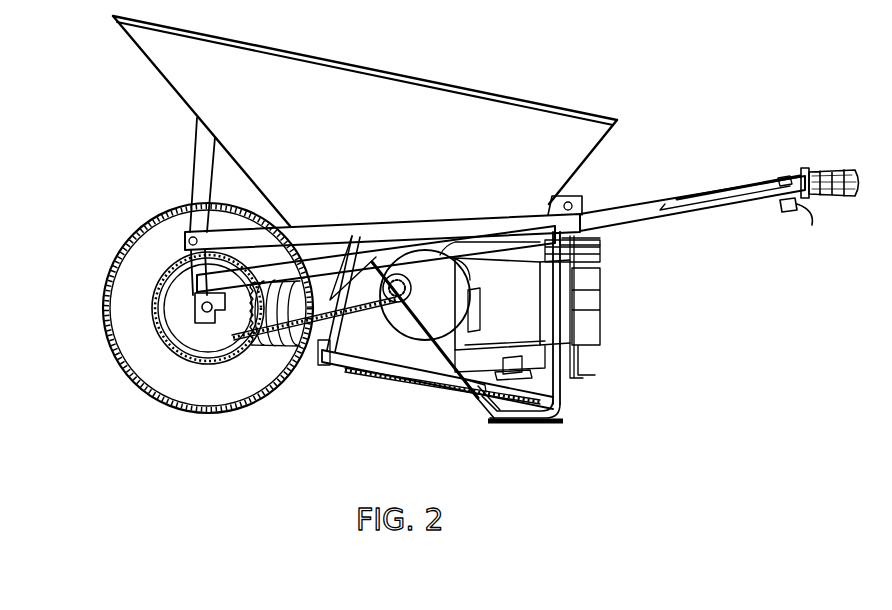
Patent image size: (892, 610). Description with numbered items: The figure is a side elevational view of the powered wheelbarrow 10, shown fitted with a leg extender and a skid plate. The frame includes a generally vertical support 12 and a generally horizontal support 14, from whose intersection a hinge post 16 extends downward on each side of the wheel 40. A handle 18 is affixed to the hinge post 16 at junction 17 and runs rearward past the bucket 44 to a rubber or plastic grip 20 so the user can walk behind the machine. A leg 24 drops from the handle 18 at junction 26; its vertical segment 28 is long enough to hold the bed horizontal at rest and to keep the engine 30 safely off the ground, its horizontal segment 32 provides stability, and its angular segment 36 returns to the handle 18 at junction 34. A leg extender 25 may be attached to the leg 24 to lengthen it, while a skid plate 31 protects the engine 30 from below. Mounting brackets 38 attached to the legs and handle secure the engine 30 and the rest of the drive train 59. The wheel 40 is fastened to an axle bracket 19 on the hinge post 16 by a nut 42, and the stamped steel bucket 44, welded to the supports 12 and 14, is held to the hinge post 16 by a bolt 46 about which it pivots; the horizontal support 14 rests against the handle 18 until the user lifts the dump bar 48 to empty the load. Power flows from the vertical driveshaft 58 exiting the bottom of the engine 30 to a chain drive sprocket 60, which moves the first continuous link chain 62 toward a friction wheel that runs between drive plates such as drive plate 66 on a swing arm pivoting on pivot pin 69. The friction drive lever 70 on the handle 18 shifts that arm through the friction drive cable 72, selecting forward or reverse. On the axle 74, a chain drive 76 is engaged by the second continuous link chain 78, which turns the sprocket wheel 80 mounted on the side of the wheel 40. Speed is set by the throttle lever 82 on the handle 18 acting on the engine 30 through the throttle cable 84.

The wheelbarrow 10 is at (443, 44).
The vertical support 12 is at (200, 160).
The horizontal support 14 is at (317, 238).
The hinge post 16 is at (198, 263).
The junction 17 is at (197, 284).
The handle 18 is at (668, 221).
The axle bracket 19 is at (185, 303).
The grip 20 is at (822, 170).
The leg 24 is at (556, 423).
The leg extender 25 is at (493, 421).
The junction 26 is at (578, 240).
The vertical segment 28 is at (562, 397).
The engine 30 is at (595, 332).
The skid plate 31 is at (416, 392).
The horizontal segment 32 is at (523, 422).
The junction 34 is at (368, 265).
The angular segment 36 is at (472, 388).
The mounting bracket 38 is at (400, 373).
The wheel 40 is at (100, 313).
The nut 42 is at (207, 322).
The bucket 44 is at (386, 131).
The bolt 46 is at (188, 243).
The dump bar 48 is at (585, 364).
The vertical driveshaft 58 is at (505, 357).
The drive train 59 is at (312, 366).
The chain drive sprocket 60 is at (563, 412).
The first continuous link chain 62 is at (478, 398).
The drive plate 66 is at (444, 256).
The pivot pin 69 is at (408, 377).
The friction drive lever 70 is at (792, 212).
The friction drive cable 72 is at (752, 184).
The axle 74 is at (428, 270).
The chain drive 76 is at (395, 302).
The second continuous link chain 78 is at (255, 357).
The sprocket wheel 80 is at (195, 323).
The throttle lever 82 is at (786, 176).
The throttle cable 84 is at (700, 204).